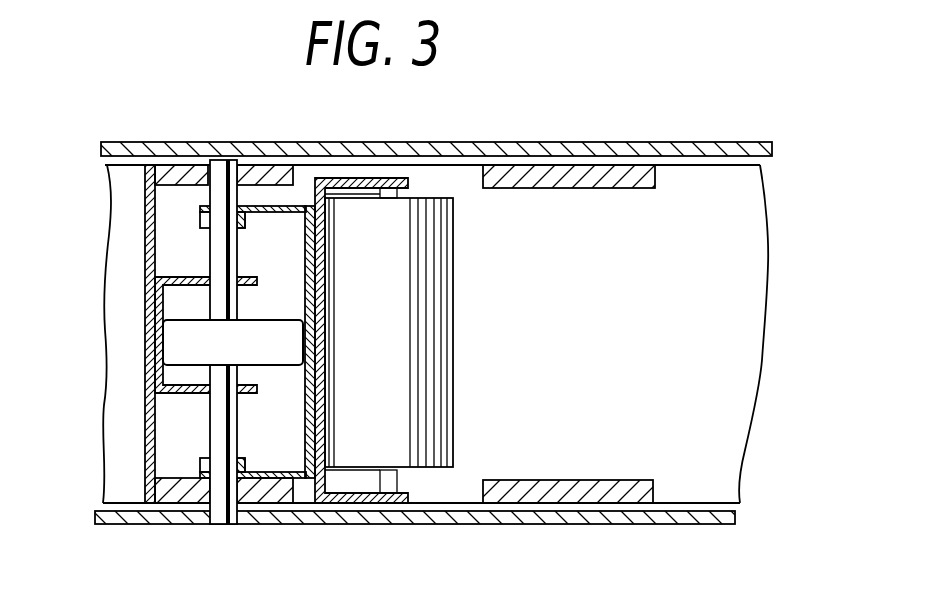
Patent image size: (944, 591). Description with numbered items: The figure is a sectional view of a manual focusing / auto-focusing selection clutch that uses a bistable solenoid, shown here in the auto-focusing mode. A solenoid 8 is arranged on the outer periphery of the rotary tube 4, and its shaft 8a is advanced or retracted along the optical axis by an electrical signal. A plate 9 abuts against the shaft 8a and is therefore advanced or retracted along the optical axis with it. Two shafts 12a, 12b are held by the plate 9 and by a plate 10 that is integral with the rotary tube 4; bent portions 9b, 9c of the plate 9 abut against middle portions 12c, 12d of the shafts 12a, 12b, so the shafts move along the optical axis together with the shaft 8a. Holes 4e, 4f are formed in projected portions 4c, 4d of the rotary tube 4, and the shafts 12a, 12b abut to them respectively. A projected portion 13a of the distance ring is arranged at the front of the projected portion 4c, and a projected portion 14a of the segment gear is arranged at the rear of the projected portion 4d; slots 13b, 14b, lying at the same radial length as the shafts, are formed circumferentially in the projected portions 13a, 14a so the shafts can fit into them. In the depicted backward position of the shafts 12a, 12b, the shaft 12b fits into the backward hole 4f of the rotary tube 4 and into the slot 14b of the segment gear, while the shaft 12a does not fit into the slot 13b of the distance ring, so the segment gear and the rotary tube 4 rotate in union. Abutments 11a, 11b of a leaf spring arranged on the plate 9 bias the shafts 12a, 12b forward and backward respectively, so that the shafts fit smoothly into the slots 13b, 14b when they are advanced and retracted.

The rotary tube 4 is at (738, 399).
The projected portion 4c is at (173, 175).
The projected portion 4d is at (168, 503).
The hole 4e is at (197, 172).
The hole 4f is at (203, 503).
The solenoid 8 is at (420, 447).
The shaft 8a is at (398, 180).
The plate 9 is at (312, 488).
The bent portion 9b is at (274, 205).
The bent portion 9c is at (267, 480).
The plate 10 is at (133, 170).
The abutment 11a is at (200, 318).
The abutment 11b is at (200, 365).
The shaft 12a is at (217, 250).
The shaft 12b is at (217, 415).
The middle portion 12c is at (200, 220).
The middle portion 12d is at (202, 466).
The projected portion 13a is at (445, 152).
The slot 13b is at (483, 150).
The projected portion 14a is at (535, 520).
The slot 14b is at (483, 505).